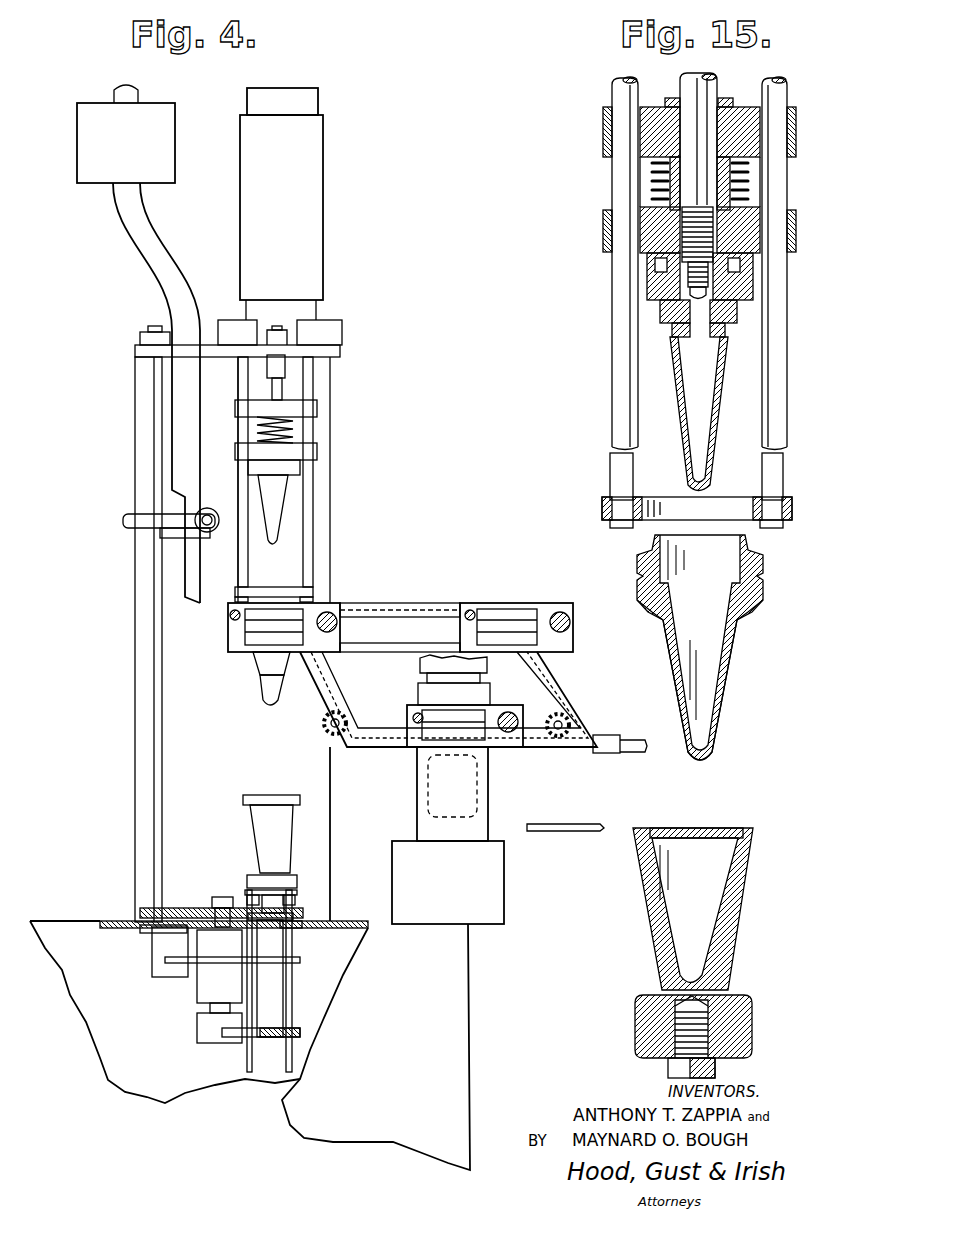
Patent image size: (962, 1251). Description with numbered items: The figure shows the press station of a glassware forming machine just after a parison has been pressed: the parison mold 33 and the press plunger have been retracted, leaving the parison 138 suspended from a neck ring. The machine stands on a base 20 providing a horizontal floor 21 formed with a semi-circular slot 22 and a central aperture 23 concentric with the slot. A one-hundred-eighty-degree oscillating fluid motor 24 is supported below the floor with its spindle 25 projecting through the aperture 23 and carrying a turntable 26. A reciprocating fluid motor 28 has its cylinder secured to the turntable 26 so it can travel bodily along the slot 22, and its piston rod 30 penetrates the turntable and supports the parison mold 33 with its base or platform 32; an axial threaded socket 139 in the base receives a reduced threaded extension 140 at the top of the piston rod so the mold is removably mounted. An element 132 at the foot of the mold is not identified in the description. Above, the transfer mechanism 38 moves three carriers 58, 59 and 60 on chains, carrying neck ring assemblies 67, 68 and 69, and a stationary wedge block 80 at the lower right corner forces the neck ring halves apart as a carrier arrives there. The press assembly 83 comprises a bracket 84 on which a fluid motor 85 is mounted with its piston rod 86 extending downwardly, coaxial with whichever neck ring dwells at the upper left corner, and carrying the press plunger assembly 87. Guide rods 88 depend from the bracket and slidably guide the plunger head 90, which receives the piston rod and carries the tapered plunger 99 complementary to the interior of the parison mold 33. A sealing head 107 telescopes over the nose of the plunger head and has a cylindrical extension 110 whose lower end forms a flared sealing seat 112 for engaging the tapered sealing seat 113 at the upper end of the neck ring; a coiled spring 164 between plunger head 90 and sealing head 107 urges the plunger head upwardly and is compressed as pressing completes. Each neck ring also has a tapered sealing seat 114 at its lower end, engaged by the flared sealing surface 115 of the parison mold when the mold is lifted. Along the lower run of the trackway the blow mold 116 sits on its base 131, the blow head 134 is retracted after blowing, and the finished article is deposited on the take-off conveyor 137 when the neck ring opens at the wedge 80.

In FIG. 4, the base 20 is at (468, 982).
In FIG. 4, the horizontal floor 21 is at (360, 930).
In FIG. 4, the semi-circular slot 22 is at (286, 929).
In FIG. 4, the central aperture 23 is at (219, 916).
In FIG. 4, the oscillating fluid motor 24 is at (206, 986).
In FIG. 4, the spindle 25 is at (225, 897).
In FIG. 4, the turntable 26 is at (170, 908).
In FIG. 4, the reciprocating fluid motor 28 is at (275, 996).
In FIG. 15, the piston rod 30 is at (680, 1069).
In FIG. 4, the base or platform 32 is at (255, 876).
In FIG. 4, the parison mold 33 is at (255, 795).
In FIG. 15, the parison mold 33 is at (746, 876).
In FIG. 4, the transfer mechanism 38 is at (401, 596).
In FIG. 4, the carrier 58 is at (320, 603).
In FIG. 4, the carrier 59 is at (414, 722).
In FIG. 4, the carrier 60 is at (545, 603).
In FIG. 4, the neck ring assembly 67 is at (243, 632).
In FIG. 15, the neck ring assembly 67 is at (765, 581).
In FIG. 4, the neck ring assembly 68 is at (470, 716).
In FIG. 4, the neck ring assembly 69 is at (500, 607).
In FIG. 4, the wedge block 80 is at (605, 735).
In FIG. 4, the press assembly 83 is at (346, 272).
In FIG. 4, the bracket 84 is at (340, 353).
In FIG. 4, the fluid motor 85 is at (305, 192).
In FIG. 15, the piston rod 86 is at (712, 80).
In FIG. 4, the press plunger assembly 87 is at (334, 436).
In FIG. 4, the guide rods 88 is at (246, 370).
In FIG. 15, the guide rods 88 is at (616, 178).
In FIG. 15, the plunger head 90 is at (733, 126).
In FIG. 15, the tapered plunger 99 is at (718, 402).
In FIG. 15, the sealing head 107 is at (642, 256).
In FIG. 15, the cylindrical extension 110 is at (755, 281).
In FIG. 15, the flared sealing seat 112 is at (736, 320).
In FIG. 15, the tapered sealing seat 113 is at (748, 539).
In FIG. 15, the tapered sealing seat 114 is at (756, 609).
In FIG. 15, the flared sealing surface 115 is at (735, 832).
In FIG. 4, the blow mold 116 is at (488, 786).
In FIG. 4, the base for the blow mold 131 is at (504, 881).
In FIG. 15, the nozzle base 132 is at (752, 1031).
In FIG. 4, the blow head 134 is at (420, 692).
In FIG. 4, the take-off conveyor 137 is at (545, 836).
In FIG. 4, the parison 138 is at (262, 674).
In FIG. 15, the parison 138 is at (728, 666).
In FIG. 15, the axial threaded socket 139 is at (712, 1010).
In FIG. 15, the reduced threaded extension 140 is at (680, 1031).
In FIG. 15, the coiled spring 164 is at (748, 184).